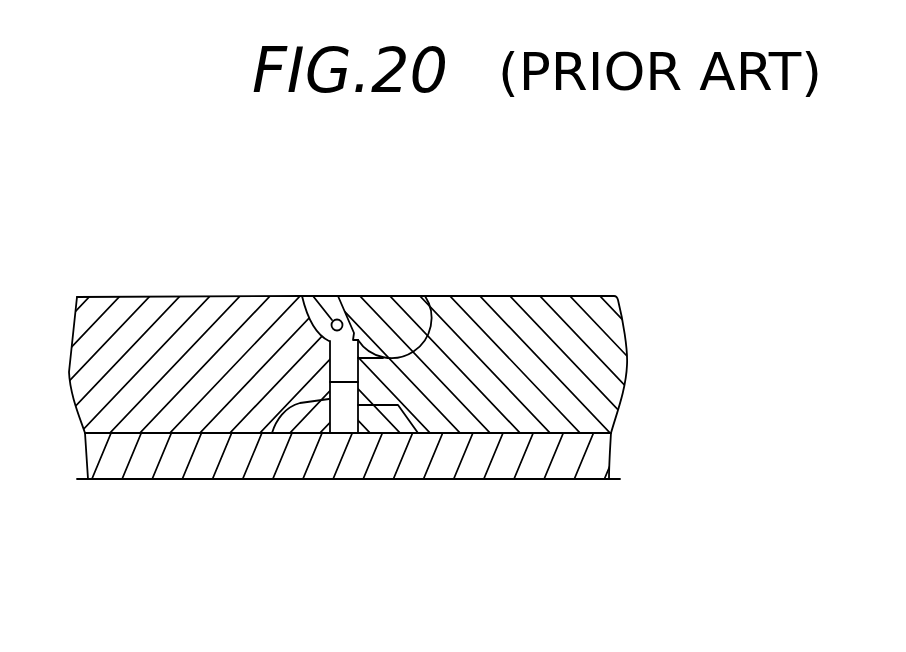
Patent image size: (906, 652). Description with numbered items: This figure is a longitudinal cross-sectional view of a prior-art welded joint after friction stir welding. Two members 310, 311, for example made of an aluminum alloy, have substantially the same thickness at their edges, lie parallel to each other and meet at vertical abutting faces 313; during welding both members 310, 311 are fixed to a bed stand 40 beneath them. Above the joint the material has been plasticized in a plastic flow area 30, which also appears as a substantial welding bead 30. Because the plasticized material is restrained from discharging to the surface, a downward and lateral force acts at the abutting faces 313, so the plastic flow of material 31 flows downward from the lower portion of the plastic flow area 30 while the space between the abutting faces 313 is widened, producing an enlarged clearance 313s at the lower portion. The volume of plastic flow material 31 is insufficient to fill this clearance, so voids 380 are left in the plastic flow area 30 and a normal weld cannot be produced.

The member to be welded 310 is at (135, 297).
The member to be welded 311 is at (542, 296).
The bed stand 40 is at (580, 479).
The voids 380 is at (323, 296).
The plastic flow area 30 is at (353, 296).
The plastic flow of material 31 is at (424, 296).
The abutting faces 313 is at (272, 433).
The enlarged clearance 313s is at (345, 418).